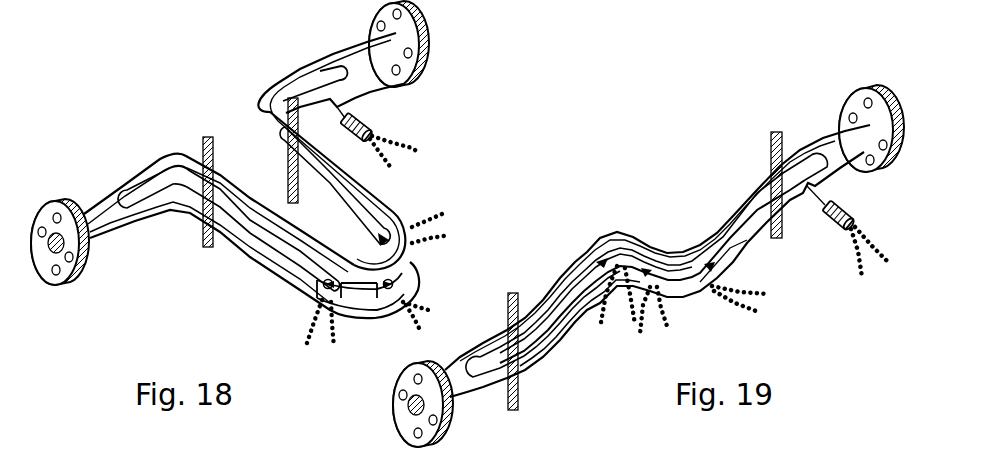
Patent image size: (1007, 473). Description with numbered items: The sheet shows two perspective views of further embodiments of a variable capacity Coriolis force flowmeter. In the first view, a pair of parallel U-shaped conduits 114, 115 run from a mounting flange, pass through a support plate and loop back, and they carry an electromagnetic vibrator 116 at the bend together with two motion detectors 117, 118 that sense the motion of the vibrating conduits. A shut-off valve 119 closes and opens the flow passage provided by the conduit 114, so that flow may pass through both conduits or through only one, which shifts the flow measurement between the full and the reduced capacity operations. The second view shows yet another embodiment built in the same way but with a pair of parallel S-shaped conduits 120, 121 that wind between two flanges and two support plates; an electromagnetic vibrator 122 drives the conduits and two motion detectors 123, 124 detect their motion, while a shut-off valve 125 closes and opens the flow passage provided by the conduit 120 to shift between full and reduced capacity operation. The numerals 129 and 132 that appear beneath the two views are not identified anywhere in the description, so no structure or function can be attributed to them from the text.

In FIG. 18, the U-shaped conduit 114 is at (247, 262).
In FIG. 18, the U-shaped conduit 115 is at (233, 238).
In FIG. 18, the electromagnetic vibrator 116 is at (396, 292).
In FIG. 18, the motion detector 117 is at (322, 294).
In FIG. 18, the motion detector 118 is at (388, 213).
In FIG. 18, the shut-off valve 119 is at (367, 112).
In FIG. 19, the S-shaped conduit 120 is at (567, 318).
In FIG. 19, the S-shaped conduit 121 is at (551, 287).
In FIG. 19, the electromagnetic vibrator 122 is at (677, 282).
In FIG. 19, the motion detector 123 is at (596, 266).
In FIG. 19, the motion detector 124 is at (708, 282).
In FIG. 19, the shut-off valve 125 is at (830, 214).
In FIG. 18, the heat pipe assembly 129 is at (313, 464).
In FIG. 19, the heat pipe assembly 132 is at (726, 464).